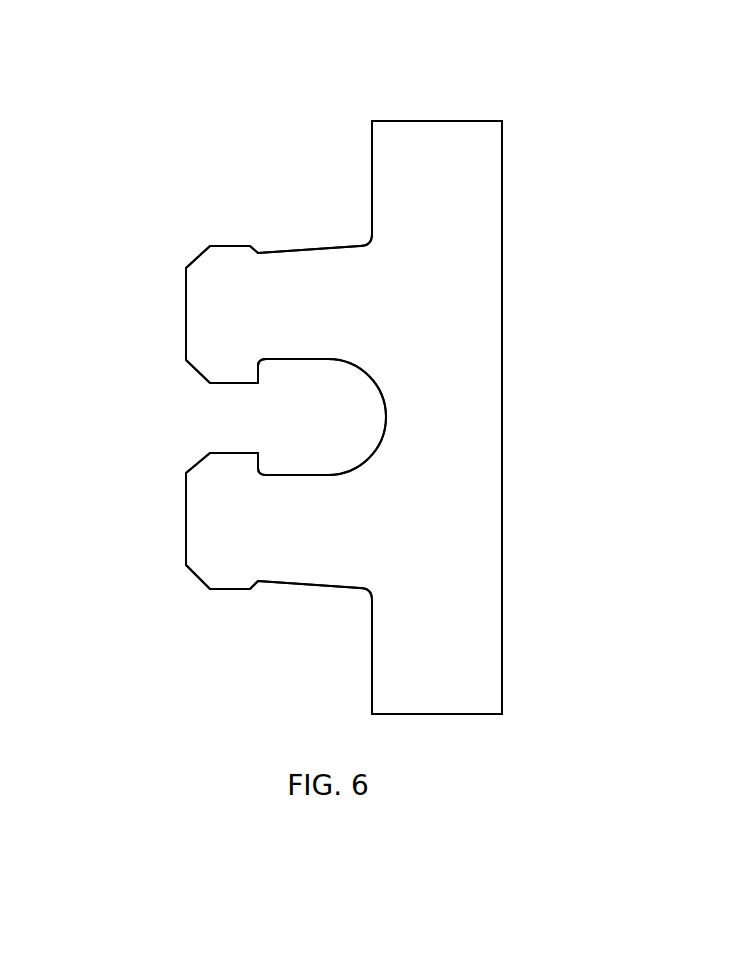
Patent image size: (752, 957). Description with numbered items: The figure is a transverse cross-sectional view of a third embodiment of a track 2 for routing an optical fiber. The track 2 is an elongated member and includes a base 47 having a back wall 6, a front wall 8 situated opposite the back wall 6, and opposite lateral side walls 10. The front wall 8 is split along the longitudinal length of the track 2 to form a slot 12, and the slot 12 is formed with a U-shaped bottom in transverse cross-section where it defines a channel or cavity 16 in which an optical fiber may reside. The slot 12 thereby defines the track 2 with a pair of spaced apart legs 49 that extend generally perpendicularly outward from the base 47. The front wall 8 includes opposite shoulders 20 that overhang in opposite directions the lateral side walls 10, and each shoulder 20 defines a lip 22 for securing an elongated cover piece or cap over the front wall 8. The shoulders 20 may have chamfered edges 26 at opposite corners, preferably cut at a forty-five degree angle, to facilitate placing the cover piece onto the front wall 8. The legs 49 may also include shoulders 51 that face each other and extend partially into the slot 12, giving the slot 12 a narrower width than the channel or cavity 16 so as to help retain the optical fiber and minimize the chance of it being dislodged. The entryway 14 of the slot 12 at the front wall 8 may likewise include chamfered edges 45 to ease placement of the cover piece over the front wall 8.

The track 2 is at (518, 88).
The back wall 6 is at (502, 491).
The front wall 8 is at (186, 312).
The lateral side walls 10 is at (345, 246).
The slot 12 is at (195, 417).
The entryway 14 is at (243, 398).
The channel or cavity 16 is at (318, 416).
The shoulders 20 is at (233, 246).
The lip 22 is at (258, 250).
The chamfered edges 26 is at (196, 257).
The chamfered edges 45 is at (194, 368).
The base 47 is at (470, 714).
The legs 49 is at (186, 282).
The shoulders 51 is at (232, 383).